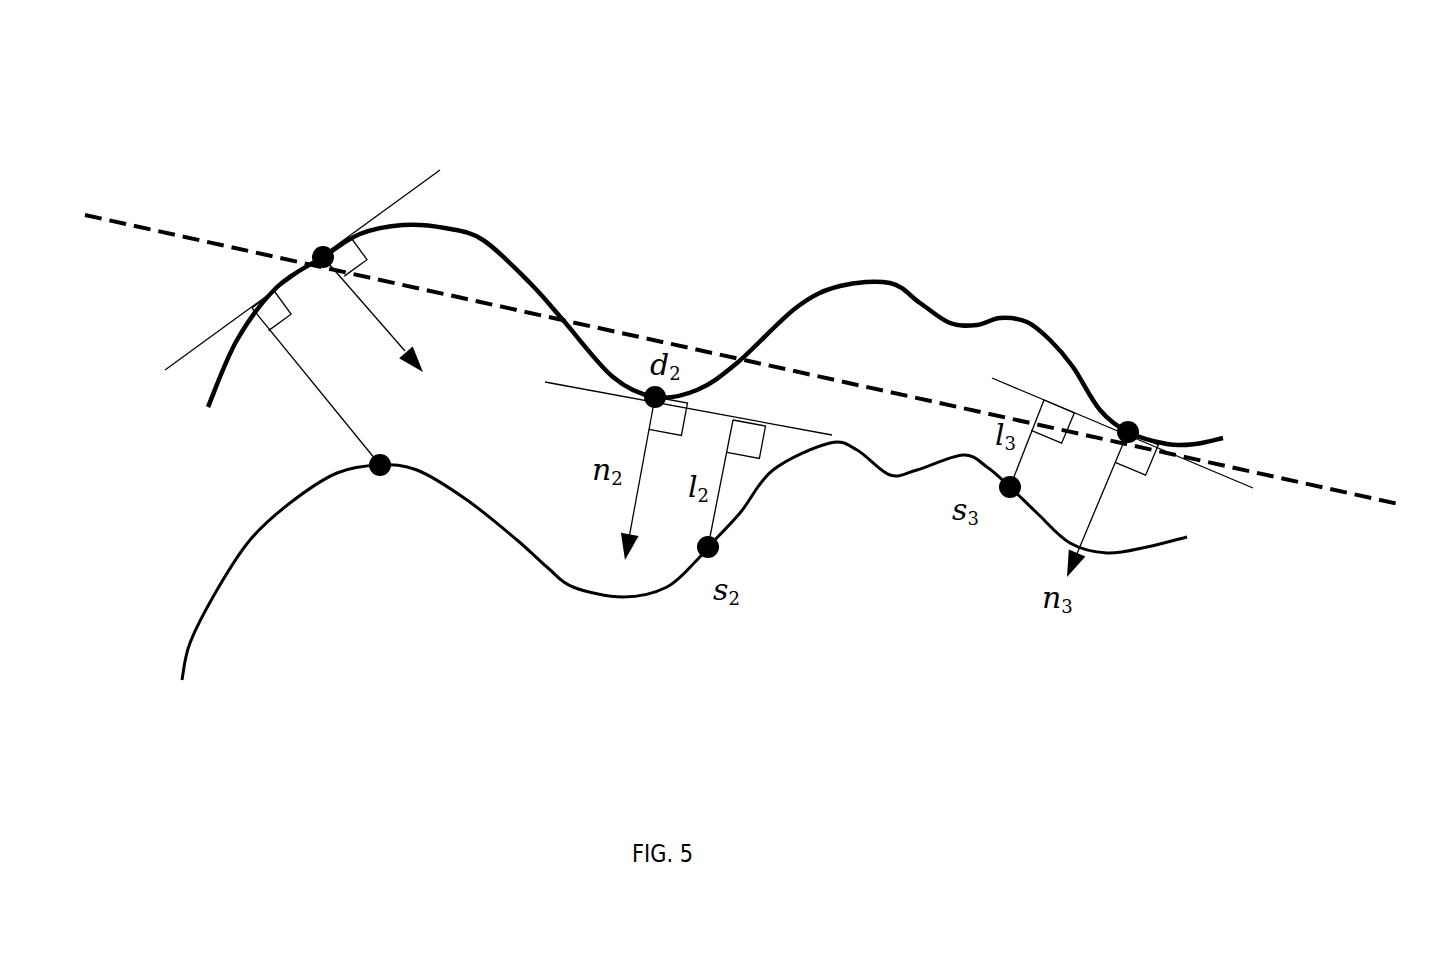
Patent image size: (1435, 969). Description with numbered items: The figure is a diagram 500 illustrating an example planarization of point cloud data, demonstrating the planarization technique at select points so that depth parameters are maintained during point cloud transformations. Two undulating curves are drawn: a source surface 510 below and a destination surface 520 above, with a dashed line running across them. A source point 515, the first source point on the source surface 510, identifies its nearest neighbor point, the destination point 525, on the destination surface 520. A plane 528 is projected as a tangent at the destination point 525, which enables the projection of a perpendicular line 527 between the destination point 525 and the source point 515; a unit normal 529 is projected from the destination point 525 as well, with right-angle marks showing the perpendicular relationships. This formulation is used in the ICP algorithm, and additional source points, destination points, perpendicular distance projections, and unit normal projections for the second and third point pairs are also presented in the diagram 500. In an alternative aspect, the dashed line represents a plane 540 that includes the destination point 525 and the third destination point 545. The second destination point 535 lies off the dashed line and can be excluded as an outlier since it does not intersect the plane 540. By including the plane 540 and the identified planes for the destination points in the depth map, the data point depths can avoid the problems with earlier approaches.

The diagram 500 is at (128, 128).
The source surface 510 is at (555, 585).
The source point 515 is at (392, 526).
The destination surface 520 is at (957, 318).
The destination point 525 is at (280, 210).
The perpendicular line 527 is at (228, 470).
The plane 528 is at (452, 177).
The unit normal 529 is at (440, 352).
The destination point 535 is at (675, 348).
The plane 540 is at (1312, 483).
The destination point 545 is at (1150, 383).